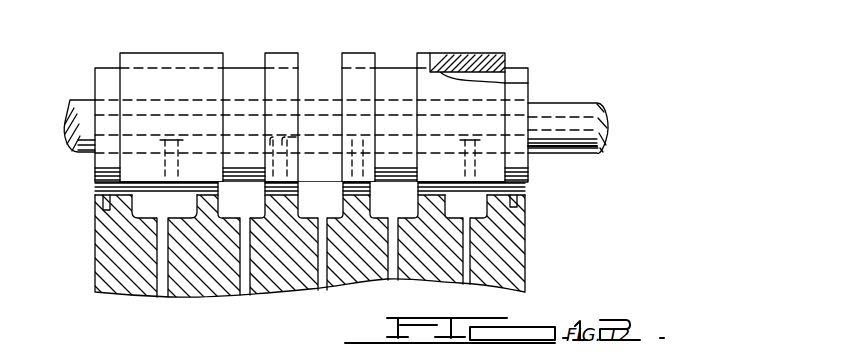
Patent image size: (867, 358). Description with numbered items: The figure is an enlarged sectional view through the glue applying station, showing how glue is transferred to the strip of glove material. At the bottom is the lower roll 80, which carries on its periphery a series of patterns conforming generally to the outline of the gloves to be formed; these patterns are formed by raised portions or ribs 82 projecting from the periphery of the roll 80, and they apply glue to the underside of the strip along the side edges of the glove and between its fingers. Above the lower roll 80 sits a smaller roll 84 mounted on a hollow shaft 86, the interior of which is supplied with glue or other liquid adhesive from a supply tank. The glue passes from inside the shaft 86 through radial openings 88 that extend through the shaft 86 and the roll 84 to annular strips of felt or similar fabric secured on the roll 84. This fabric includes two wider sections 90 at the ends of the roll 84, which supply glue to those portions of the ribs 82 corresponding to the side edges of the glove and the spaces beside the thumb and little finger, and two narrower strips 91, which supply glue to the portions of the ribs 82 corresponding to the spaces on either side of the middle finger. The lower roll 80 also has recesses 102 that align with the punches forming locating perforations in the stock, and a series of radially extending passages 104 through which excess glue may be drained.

The lower roll 80 is at (313, 254).
The raised portions or ribs 82 is at (127, 193).
The smaller roll 84 is at (528, 83).
The hollow shaft 86 is at (577, 103).
The radial openings 88 is at (530, 163).
The wider sections 90 is at (177, 53).
The narrower strips 91 is at (347, 53).
The recesses 102 is at (108, 195).
The radially extending passages 104 is at (243, 289).